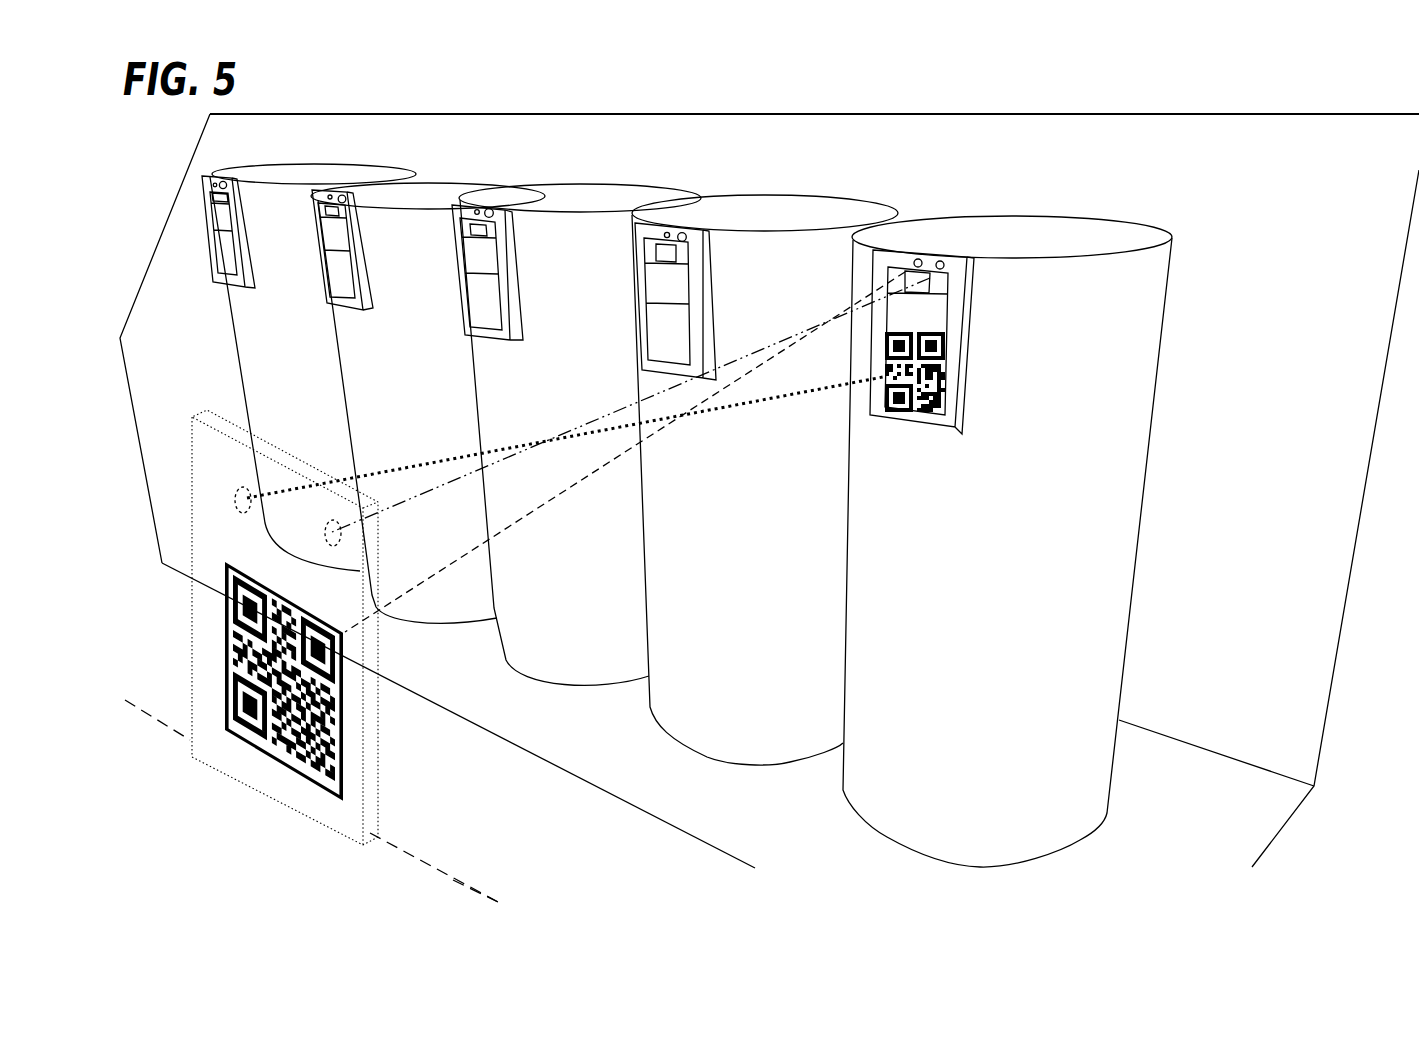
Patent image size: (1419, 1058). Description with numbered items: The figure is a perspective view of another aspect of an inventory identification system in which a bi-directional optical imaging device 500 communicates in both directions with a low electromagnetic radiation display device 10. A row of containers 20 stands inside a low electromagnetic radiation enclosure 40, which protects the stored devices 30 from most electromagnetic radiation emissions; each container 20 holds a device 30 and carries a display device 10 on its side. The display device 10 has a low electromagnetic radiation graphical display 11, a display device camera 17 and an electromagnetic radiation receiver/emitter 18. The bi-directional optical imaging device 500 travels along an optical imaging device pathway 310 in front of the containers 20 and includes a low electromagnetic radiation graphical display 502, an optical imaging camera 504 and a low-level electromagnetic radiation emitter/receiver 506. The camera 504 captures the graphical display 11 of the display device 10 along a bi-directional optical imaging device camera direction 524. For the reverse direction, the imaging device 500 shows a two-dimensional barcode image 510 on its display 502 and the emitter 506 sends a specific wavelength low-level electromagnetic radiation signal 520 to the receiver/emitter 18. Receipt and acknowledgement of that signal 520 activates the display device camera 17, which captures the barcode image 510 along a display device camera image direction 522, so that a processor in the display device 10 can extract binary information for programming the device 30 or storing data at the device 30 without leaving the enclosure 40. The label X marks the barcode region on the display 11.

The low electromagnetic radiation display device 10 is at (966, 329).
The low electromagnetic radiation graphical display 11 is at (947, 369).
The display device camera 17 is at (918, 259).
The electromagnetic radiation receiver/emitter 18 is at (940, 261).
The container 20 is at (1007, 541).
The device 30 is at (1007, 541).
The low electromagnetic radiation enclosure 40 is at (769, 490).
The optical imaging device pathway 310 is at (453, 880).
The bi-directional optical imaging device 500 is at (232, 760).
The low electromagnetic radiation graphical display 502 is at (234, 707).
The optical imaging camera 504 is at (233, 497).
The low-level electromagnetic radiation emitter/receiver 506 is at (327, 532).
The 2-D barcode image 510 is at (300, 775).
The low-level electromagnetic radiation signal 520 is at (757, 343).
The display device camera image direction 522 is at (343, 630).
The bi-directional optical imaging device camera direction 524 is at (393, 468).
The code image X is at (931, 403).